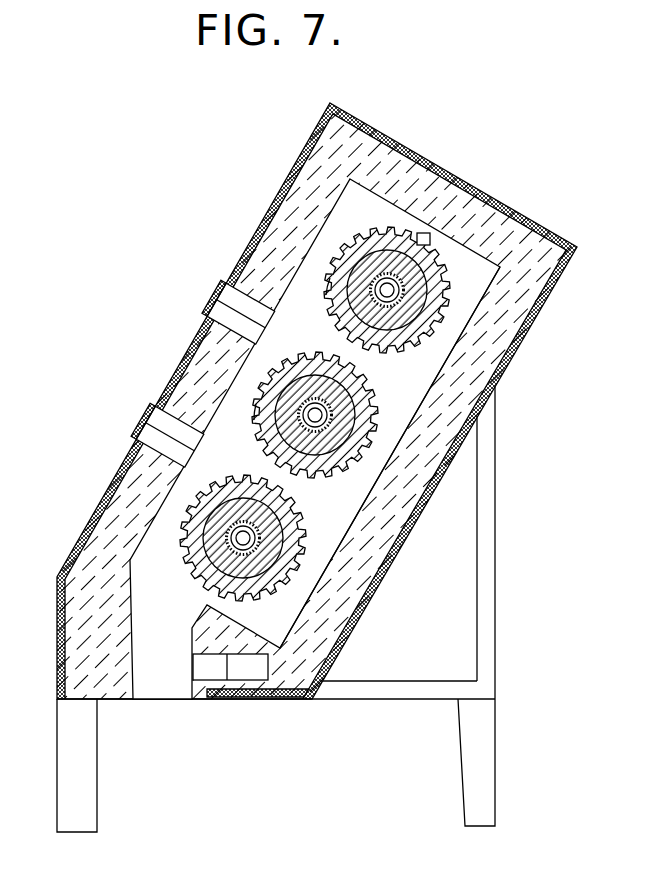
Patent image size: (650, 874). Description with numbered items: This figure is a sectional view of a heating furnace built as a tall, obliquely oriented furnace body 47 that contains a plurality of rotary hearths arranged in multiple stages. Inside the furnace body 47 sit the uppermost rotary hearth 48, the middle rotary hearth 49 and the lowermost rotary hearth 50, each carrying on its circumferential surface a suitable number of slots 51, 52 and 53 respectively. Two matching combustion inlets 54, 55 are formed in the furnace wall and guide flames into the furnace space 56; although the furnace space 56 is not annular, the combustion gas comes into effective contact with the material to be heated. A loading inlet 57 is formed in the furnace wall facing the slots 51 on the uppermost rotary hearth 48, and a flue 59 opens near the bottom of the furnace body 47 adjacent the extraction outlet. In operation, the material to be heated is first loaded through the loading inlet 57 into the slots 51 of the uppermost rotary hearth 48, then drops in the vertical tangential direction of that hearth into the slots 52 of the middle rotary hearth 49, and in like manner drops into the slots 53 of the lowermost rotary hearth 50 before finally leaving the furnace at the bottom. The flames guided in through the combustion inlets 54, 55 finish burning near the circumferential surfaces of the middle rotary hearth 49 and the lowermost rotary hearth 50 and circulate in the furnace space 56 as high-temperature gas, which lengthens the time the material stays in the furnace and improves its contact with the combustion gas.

The furnace body 47 is at (413, 174).
The uppermost rotary hearth 48 is at (365, 246).
The middle rotary hearth 49 is at (298, 361).
The lowermost rotary hearth 50 is at (221, 493).
The slots 51 is at (326, 303).
The slots 52 is at (257, 428).
The slots 53 is at (186, 554).
The combustion inlet 54 is at (221, 305).
The combustion inlet 55 is at (166, 436).
The furnace space 56 is at (330, 510).
The loading inlet 57 is at (431, 240).
The flue 59 is at (248, 667).